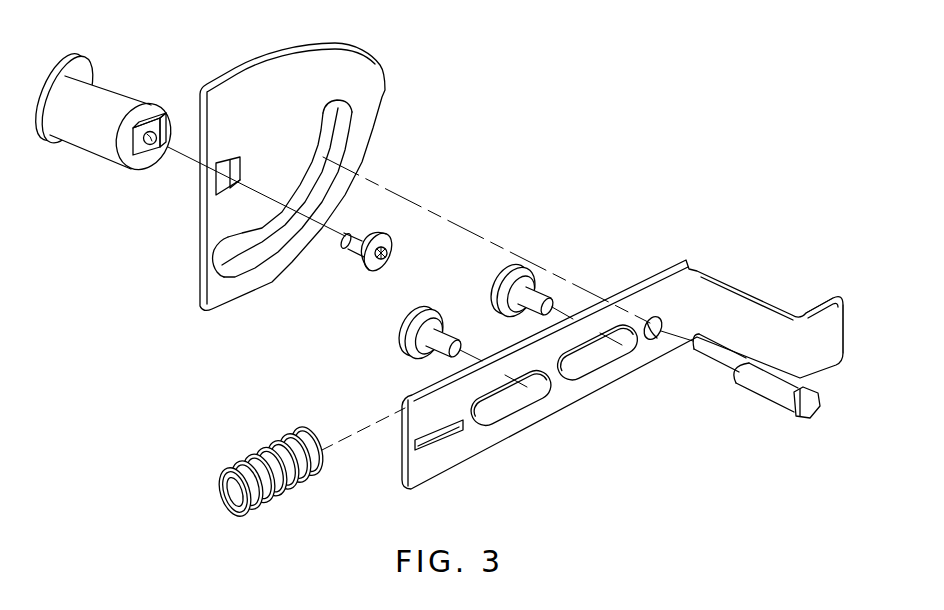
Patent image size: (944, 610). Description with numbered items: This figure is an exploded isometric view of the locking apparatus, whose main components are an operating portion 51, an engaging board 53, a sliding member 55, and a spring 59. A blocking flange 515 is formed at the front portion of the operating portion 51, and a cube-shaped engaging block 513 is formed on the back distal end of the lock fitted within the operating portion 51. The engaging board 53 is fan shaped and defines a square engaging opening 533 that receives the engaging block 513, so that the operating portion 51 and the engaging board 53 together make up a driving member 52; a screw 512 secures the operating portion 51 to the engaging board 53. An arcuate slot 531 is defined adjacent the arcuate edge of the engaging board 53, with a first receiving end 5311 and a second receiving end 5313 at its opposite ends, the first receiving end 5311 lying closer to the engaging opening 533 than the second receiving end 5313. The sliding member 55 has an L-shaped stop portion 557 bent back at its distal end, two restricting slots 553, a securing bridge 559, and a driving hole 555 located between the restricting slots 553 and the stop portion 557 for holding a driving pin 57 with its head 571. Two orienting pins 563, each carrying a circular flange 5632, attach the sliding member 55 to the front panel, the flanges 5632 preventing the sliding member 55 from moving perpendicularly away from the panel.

The operating portion 51 is at (83, 135).
The blocking flange 515 is at (92, 65).
The engaging block 513 is at (148, 119).
The driving member 52 is at (128, 288).
The engaging board 53 is at (222, 293).
The engaging opening 533 is at (212, 176).
The slot 531 is at (270, 233).
The second receiving end 5313 is at (335, 116).
The first receiving end 5311 is at (222, 253).
The screw 512 is at (379, 241).
The orienting pins 563 is at (444, 311).
The circular flange 5632 is at (432, 312).
The sliding member 55 is at (421, 469).
The restricting slots 553 is at (509, 400).
The driving hole 555 is at (657, 338).
The stop portion 557 is at (838, 340).
The securing bridge 559 is at (454, 429).
The driving pin 57 is at (754, 397).
The head of pin 571 is at (810, 411).
The spring 59 is at (237, 467).